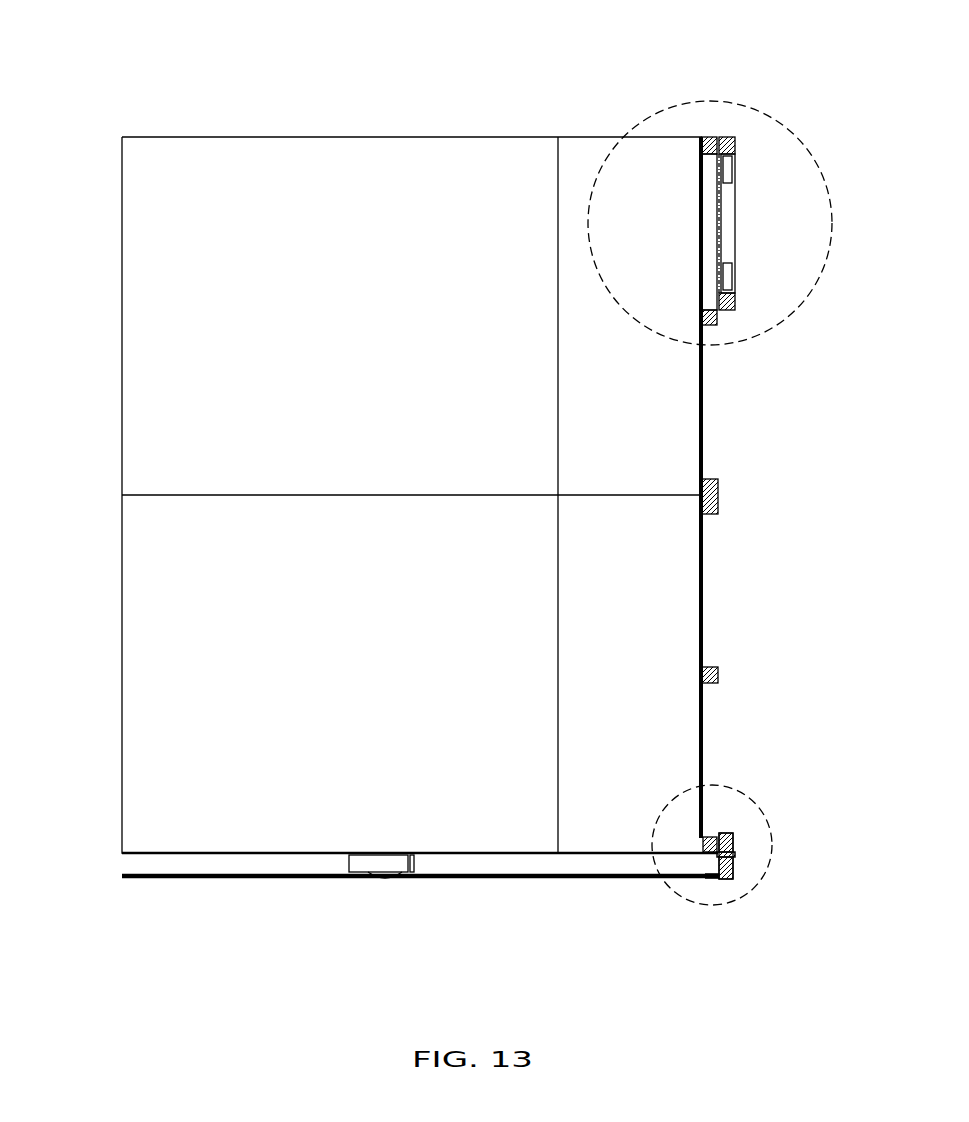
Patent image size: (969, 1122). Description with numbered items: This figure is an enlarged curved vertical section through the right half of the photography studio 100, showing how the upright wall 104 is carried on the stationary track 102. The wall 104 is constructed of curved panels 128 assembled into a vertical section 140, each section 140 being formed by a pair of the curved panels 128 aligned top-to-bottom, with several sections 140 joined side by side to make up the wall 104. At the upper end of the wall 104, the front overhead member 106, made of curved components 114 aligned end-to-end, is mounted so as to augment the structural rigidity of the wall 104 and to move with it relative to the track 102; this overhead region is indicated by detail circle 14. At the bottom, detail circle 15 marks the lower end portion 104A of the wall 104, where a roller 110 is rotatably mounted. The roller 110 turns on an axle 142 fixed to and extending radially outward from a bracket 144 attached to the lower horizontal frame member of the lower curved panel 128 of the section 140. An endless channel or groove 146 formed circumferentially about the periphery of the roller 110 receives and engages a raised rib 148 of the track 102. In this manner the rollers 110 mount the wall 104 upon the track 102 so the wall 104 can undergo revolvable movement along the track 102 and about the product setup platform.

The photography studio 100 is at (170, 78).
The upright wall 104 is at (413, 118).
The vertical section 140 is at (253, 137).
The curved panel 128 is at (122, 343).
The detail circle 14 is at (745, 107).
The front overhead member 106 is at (759, 231).
The curved component 114 is at (735, 253).
The detail circle 15 is at (737, 790).
The lower end portion 104A is at (700, 840).
The endless channel or groove 146 is at (727, 833).
The axle 142 is at (770, 854).
The raised rib 148 is at (733, 879).
The roller 110 is at (738, 862).
The bracket 144 is at (717, 872).
The stationary track 102 is at (545, 874).